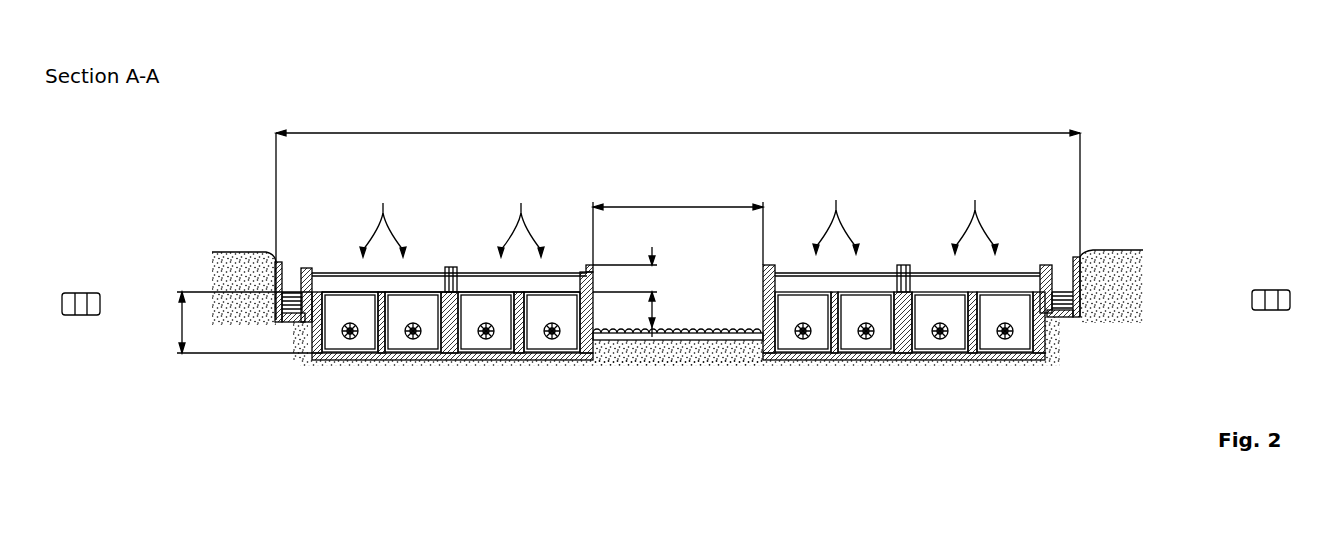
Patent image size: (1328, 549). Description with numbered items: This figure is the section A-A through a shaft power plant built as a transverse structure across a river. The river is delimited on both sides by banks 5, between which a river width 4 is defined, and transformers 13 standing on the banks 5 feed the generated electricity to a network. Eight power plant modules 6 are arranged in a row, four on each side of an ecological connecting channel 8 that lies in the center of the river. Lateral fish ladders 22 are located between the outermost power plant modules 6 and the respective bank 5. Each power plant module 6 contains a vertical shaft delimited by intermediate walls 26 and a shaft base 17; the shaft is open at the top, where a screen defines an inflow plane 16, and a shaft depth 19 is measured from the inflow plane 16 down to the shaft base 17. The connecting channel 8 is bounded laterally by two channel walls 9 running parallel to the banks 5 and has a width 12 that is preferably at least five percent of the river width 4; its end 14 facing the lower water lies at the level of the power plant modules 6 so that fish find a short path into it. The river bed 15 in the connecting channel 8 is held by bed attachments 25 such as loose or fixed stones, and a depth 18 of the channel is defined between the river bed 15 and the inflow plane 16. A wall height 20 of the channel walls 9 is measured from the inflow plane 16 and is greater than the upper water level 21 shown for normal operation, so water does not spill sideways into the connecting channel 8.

The river width 4 is at (905, 130).
The bank 5 is at (232, 252).
The power plant module 6 is at (679, 217).
The ecological connecting channel 8 is at (706, 230).
The channel wall 9 is at (592, 270).
The width of the connecting channel 12 is at (673, 205).
The transformer 13 is at (85, 293).
The end of the connecting channel 14 is at (763, 373).
The river bed 15 is at (697, 362).
The inflow plane 16 is at (563, 290).
The shaft base 17 is at (407, 362).
The depth of the connecting channel 18 is at (652, 314).
The shaft depth 19 is at (178, 330).
The wall height 20 is at (656, 278).
The upper water level 21 is at (475, 272).
The lateral fish ladder 22 is at (293, 257).
The bed attachment 25 is at (743, 355).
The intermediate wall 26 is at (313, 362).